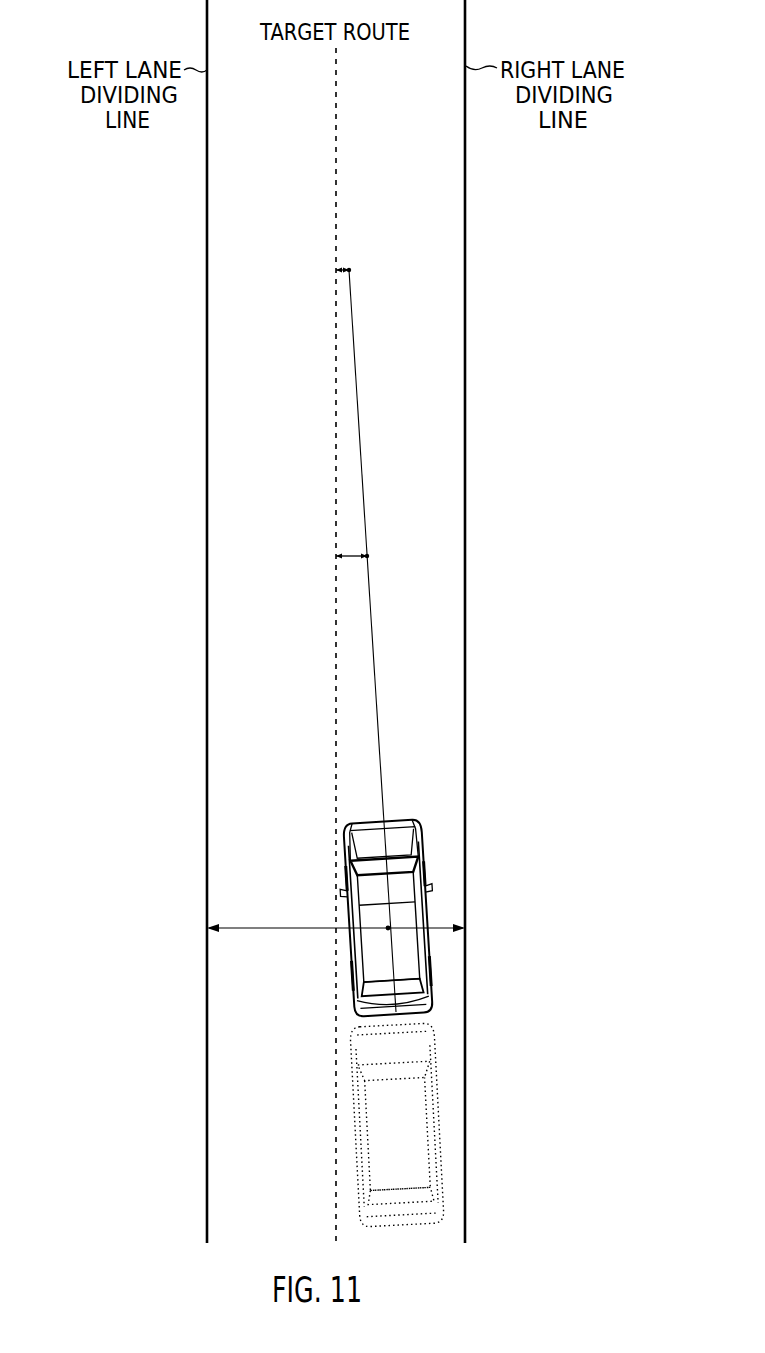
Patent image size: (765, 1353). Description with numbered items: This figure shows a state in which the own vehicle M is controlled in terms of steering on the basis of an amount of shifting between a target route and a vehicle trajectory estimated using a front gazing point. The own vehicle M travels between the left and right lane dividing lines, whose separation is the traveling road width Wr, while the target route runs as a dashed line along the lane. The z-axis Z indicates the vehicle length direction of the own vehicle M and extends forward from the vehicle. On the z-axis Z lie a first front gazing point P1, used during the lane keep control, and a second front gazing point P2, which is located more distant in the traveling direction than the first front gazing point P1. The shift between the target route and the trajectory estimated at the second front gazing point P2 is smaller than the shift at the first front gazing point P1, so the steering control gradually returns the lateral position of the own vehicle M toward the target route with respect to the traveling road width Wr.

The z-axis Z is at (349, 270).
The first front gazing point P1 is at (381, 558).
The second front gazing point P2 is at (365, 273).
The traveling road width Wr is at (316, 932).
The own vehicle M is at (344, 924).